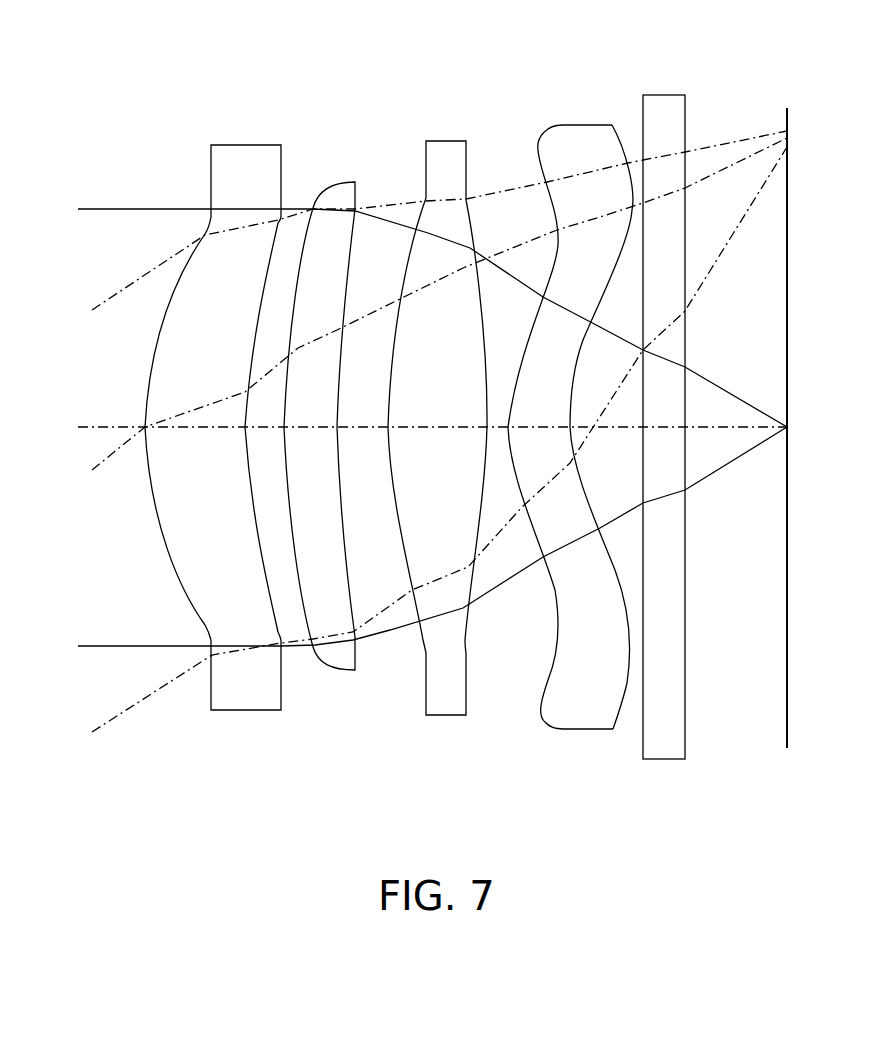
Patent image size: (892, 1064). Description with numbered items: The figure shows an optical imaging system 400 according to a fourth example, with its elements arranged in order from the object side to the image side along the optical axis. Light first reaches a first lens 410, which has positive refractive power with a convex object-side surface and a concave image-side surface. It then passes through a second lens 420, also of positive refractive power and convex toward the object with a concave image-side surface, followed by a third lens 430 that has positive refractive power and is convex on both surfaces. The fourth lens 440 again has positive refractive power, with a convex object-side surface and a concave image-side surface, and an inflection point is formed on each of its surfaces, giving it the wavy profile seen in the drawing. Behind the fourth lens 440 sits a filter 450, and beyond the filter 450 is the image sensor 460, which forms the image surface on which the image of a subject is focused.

The optical imaging system 400 is at (437, 98).
The first lens 410 is at (245, 710).
The second lens 420 is at (343, 672).
The third lens 430 is at (447, 715).
The fourth lens 440 is at (588, 729).
The filter 450 is at (663, 759).
The image sensor 460 is at (783, 727).